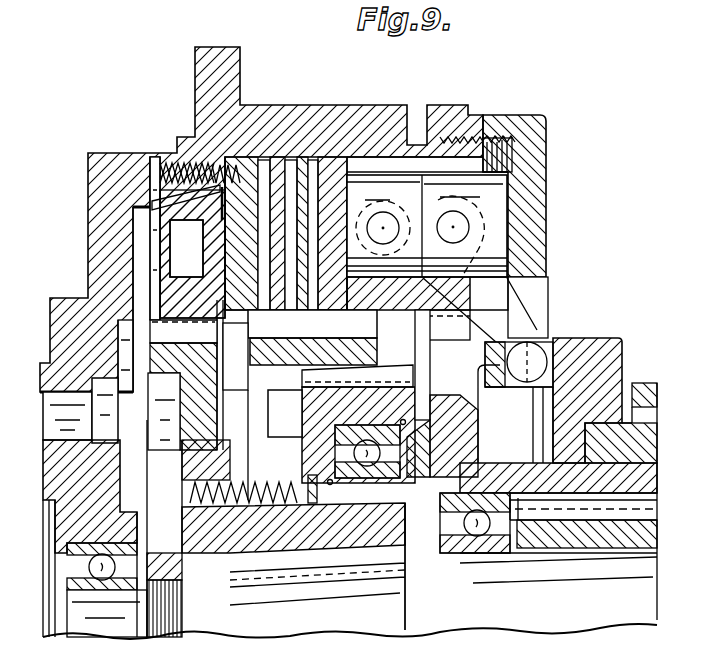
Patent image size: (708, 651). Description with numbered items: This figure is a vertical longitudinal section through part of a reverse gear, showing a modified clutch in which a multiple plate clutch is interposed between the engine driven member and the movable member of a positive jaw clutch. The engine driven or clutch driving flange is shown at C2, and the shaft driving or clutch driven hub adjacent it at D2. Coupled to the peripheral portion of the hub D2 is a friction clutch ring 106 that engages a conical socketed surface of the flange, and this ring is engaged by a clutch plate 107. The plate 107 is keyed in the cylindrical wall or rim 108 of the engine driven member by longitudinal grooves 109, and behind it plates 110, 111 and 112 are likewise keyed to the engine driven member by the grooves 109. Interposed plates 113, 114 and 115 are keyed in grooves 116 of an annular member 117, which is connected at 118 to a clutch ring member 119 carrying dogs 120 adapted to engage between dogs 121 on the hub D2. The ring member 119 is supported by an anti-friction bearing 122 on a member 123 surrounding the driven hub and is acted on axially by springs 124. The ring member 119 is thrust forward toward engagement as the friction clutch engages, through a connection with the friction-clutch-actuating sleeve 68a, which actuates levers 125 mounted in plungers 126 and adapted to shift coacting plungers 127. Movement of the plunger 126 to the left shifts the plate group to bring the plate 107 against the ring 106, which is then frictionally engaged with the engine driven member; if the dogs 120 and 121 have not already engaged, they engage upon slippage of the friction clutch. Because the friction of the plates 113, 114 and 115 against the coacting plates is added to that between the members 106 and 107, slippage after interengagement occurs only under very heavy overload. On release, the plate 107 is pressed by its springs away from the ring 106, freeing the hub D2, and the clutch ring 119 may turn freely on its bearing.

The engine driven clutch driving flange C2 is at (97, 181).
The clutch driven hub D2 is at (203, 466).
The friction-clutch-actuating sleeve 68a is at (612, 373).
The friction clutch ring 106 is at (180, 298).
The clutch plate 107 is at (240, 243).
The cylindrical wall or rim 108 is at (417, 110).
The longitudinal grooves 109 is at (368, 170).
The plate 110 is at (275, 167).
The plate 111 is at (305, 180).
The plate 112 is at (368, 167).
The interposed plate 113 is at (262, 200).
The interposed plate 114 is at (290, 180).
The interposed plate 115 is at (340, 180).
The grooves 116 is at (365, 325).
The annular member 117 is at (363, 351).
The connection 118 is at (373, 377).
The clutch ring member 119 is at (400, 397).
The dogs 120 is at (298, 418).
The dogs 121 is at (244, 423).
The anti-friction bearing 122 is at (420, 435).
The member surrounding the driven hub 123 is at (380, 492).
The springs 124 is at (275, 483).
The levers 125 is at (502, 300).
The plungers 126 is at (498, 218).
The coacting plungers 127 is at (410, 200).